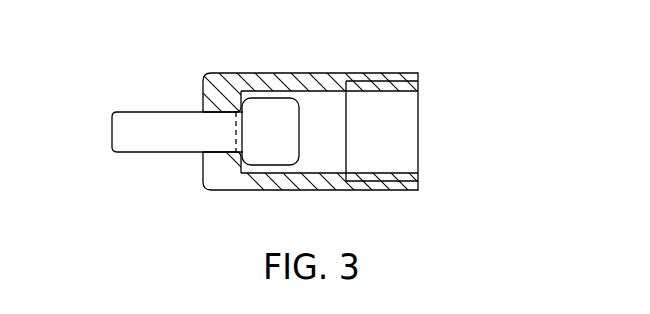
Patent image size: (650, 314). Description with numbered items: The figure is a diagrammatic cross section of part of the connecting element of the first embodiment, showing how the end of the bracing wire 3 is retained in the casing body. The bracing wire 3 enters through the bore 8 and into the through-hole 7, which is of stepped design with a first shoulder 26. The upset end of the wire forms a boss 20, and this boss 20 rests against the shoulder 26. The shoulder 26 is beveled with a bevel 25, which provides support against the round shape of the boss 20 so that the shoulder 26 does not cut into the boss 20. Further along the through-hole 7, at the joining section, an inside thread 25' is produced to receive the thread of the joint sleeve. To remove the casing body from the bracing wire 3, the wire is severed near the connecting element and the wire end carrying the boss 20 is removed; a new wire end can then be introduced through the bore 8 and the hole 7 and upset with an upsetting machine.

The bracing wire 3 is at (153, 122).
The through-hole 7 is at (482, 98).
The bore 8 is at (200, 152).
The boss 20 is at (300, 140).
The bevel 25 is at (241, 75).
The inside thread 25' is at (379, 100).
The first shoulder 26 is at (245, 190).